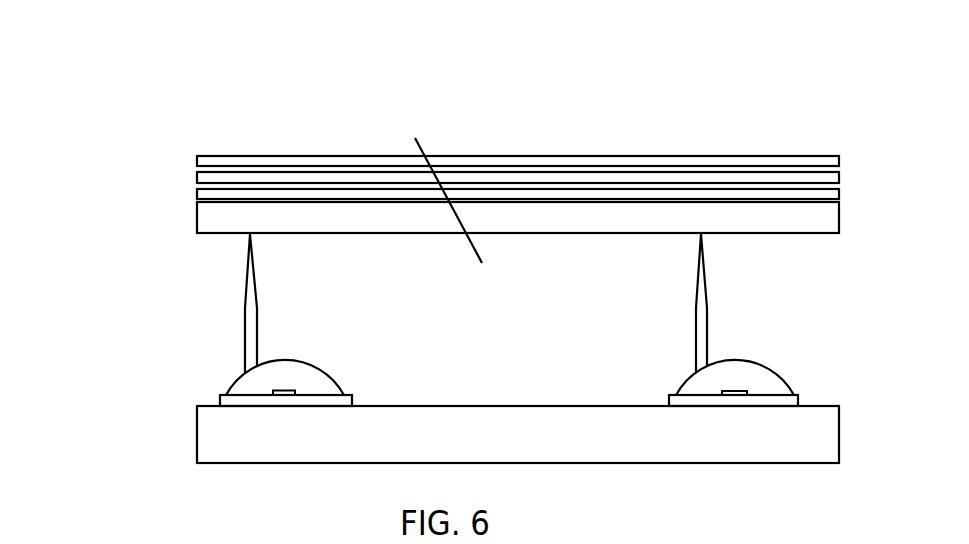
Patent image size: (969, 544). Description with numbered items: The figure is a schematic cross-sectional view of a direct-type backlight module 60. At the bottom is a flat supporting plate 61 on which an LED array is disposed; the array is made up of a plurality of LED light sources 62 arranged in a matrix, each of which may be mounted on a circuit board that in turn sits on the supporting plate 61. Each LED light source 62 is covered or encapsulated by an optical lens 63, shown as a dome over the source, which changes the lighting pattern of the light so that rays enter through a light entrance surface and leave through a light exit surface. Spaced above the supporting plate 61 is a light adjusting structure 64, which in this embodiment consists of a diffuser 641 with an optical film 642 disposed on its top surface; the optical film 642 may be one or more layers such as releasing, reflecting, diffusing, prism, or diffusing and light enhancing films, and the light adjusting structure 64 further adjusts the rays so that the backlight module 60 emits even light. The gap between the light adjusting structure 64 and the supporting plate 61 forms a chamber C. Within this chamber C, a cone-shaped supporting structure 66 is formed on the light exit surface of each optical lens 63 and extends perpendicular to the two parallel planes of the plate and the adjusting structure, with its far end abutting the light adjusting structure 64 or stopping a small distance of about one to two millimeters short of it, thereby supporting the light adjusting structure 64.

The direct-type backlight module 60 is at (549, 121).
The supporting plate 61 is at (207, 440).
The LED light source 62 is at (293, 393).
The optical lens 63 is at (295, 368).
The light adjusting structure 64 is at (108, 166).
The diffuser 641 is at (196, 217).
The optical film 642 is at (190, 158).
The supporting structure 66 is at (257, 292).
The chamber C is at (438, 184).